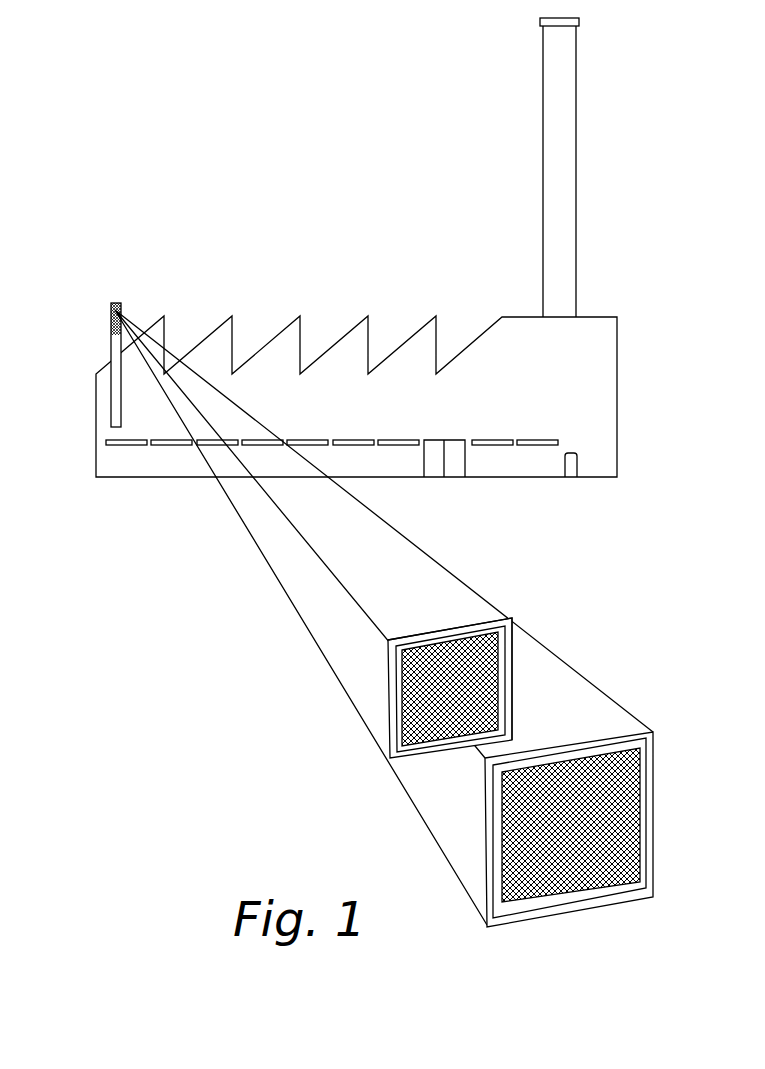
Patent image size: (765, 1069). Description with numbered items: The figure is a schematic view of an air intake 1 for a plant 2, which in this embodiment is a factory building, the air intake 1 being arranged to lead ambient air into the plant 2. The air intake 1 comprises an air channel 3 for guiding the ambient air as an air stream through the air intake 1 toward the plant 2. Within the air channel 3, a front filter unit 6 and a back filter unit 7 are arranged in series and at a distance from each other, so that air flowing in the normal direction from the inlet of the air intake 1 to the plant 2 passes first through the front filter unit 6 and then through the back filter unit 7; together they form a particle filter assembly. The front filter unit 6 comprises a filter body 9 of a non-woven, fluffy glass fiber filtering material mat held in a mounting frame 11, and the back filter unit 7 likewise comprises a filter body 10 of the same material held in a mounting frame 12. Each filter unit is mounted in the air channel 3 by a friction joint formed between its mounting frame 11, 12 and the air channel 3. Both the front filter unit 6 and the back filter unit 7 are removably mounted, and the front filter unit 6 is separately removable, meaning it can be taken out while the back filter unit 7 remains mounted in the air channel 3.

The air intake 1 is at (358, 471).
The plant 2 is at (582, 348).
The air channel 3 is at (112, 343).
The front filter unit 6 is at (625, 835).
The back filter unit 7 is at (478, 666).
The filter body 9 is at (497, 897).
The filter body 10 is at (400, 727).
The mounting frame 11 is at (593, 857).
The mounting frame 12 is at (517, 625).